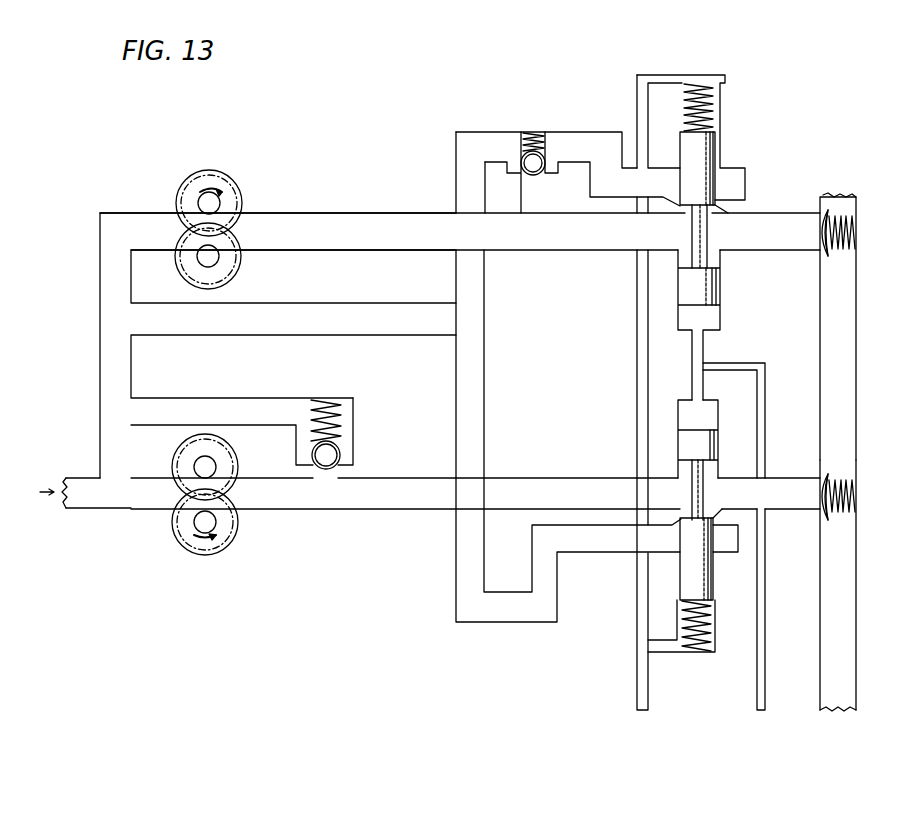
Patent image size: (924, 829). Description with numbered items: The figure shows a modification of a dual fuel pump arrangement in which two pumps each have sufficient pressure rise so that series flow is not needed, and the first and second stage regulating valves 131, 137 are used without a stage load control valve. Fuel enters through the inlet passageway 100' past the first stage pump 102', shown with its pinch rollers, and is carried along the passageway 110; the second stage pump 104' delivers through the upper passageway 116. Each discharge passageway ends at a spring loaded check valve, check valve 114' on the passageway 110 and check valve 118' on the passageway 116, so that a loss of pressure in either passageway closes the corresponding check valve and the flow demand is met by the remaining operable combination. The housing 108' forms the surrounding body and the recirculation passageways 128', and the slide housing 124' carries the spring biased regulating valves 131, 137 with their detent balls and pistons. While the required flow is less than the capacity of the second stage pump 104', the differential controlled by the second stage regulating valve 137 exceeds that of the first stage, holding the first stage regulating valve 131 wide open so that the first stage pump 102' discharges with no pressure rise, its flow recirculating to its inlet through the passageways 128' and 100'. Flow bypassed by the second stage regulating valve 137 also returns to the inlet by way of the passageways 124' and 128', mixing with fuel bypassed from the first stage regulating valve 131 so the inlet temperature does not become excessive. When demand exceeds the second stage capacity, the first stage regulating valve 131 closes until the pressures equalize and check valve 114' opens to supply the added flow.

The passageway 100' is at (85, 472).
The first stage pump 102' is at (177, 494).
The second stage pump 104' is at (185, 229).
The housing 108' is at (241, 345).
The passageway 110 is at (488, 481).
The check valve 114' is at (865, 585).
The passageway 116 is at (332, 216).
The check valve 118' is at (869, 326).
The passageway 124' is at (610, 392).
The passageway 128' is at (330, 458).
The first stage regulating valve 131 is at (719, 578).
The second stage regulating valve 137 is at (718, 141).